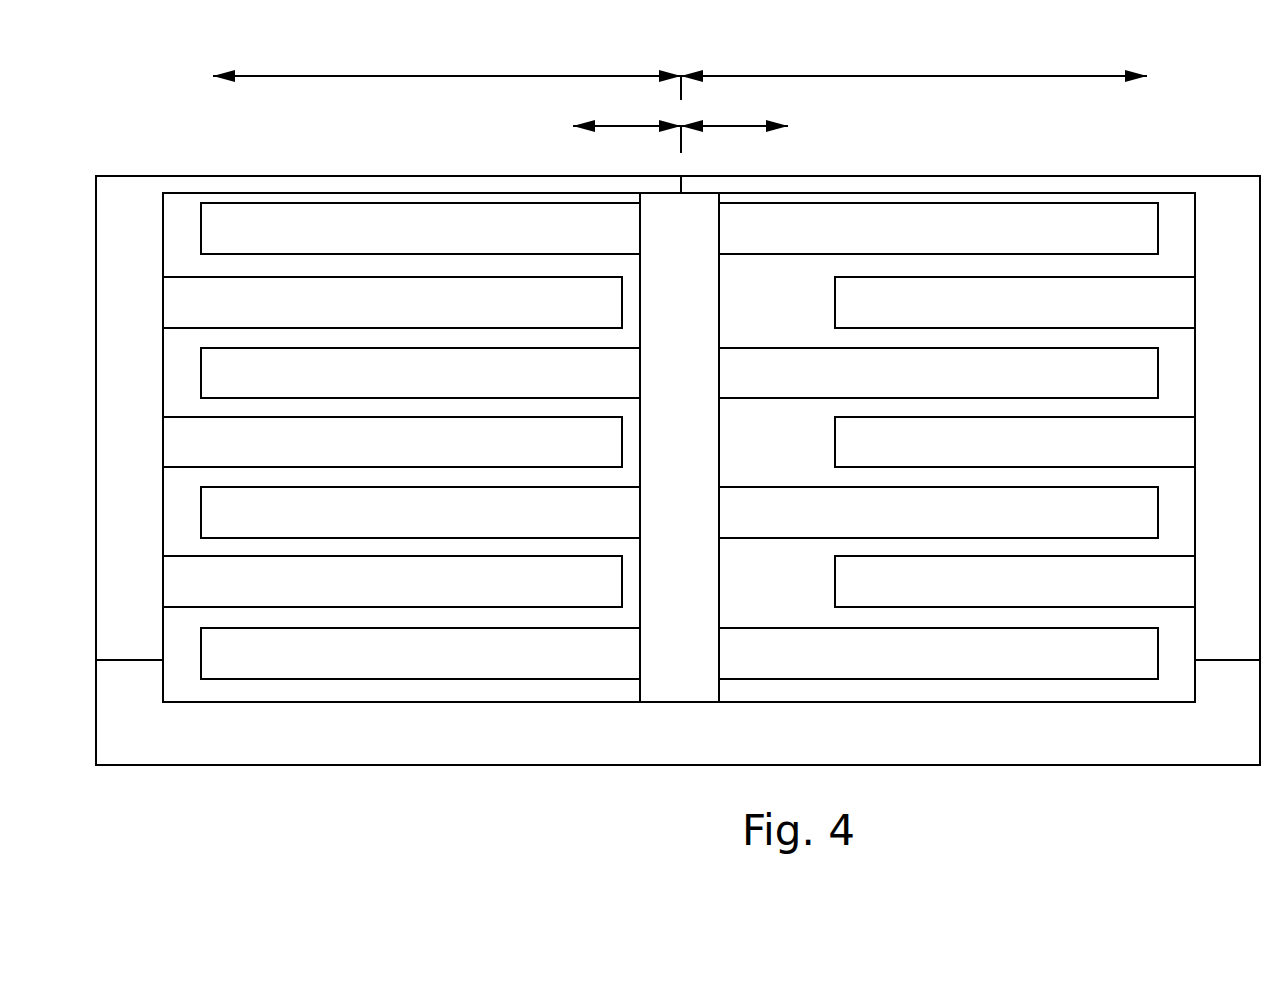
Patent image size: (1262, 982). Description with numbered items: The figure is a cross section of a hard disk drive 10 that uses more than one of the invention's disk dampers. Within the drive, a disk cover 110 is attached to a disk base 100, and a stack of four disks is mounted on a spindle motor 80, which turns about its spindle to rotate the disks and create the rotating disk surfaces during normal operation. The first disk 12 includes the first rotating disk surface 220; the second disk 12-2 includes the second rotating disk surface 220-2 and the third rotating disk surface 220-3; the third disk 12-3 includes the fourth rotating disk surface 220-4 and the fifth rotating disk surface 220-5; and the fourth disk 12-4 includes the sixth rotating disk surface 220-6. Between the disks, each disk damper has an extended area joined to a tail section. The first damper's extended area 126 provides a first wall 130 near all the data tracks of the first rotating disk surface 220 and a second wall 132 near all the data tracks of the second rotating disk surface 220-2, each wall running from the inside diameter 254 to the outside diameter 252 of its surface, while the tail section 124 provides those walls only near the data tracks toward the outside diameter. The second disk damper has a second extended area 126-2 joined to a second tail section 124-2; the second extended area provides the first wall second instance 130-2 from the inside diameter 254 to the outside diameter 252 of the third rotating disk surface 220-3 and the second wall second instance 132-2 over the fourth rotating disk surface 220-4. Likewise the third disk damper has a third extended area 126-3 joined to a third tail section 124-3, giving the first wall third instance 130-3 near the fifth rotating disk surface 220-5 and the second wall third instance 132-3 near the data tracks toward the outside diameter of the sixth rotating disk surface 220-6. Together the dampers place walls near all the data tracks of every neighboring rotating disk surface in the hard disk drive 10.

The hard disk drive 10 is at (705, 766).
The first disk 12 is at (561, 244).
The second disk 12-2 is at (568, 389).
The third disk 12-3 is at (565, 528).
The fourth disk 12-4 is at (565, 669).
The spindle motor 80 is at (679, 447).
The disk base 100 is at (679, 471).
The disk cover 110 is at (678, 482).
The tail section 124 is at (1146, 317).
The second tail section 124-2 is at (1152, 458).
The third tail section 124-3 is at (1152, 597).
The extended area 126 is at (568, 317).
The second extended area 126-2 is at (572, 458).
The third extended area 126-3 is at (572, 597).
The first wall 130 is at (317, 278).
The first wall second instance 130-2 is at (330, 418).
The first wall third instance 130-3 is at (330, 557).
The second wall 132 is at (442, 327).
The second wall second instance 132-2 is at (458, 466).
The second wall third instance 132-3 is at (456, 606).
The first rotating disk surface 220 is at (442, 253).
The second rotating disk surface 220-2 is at (330, 349).
The third rotating disk surface 220-3 is at (458, 397).
The fourth rotating disk surface 220-4 is at (330, 488).
The fifth rotating disk surface 220-5 is at (456, 537).
The sixth rotating disk surface 220-6 is at (325, 629).
The outside diameter 252 is at (448, 76).
The inside diameter 254 is at (636, 128).